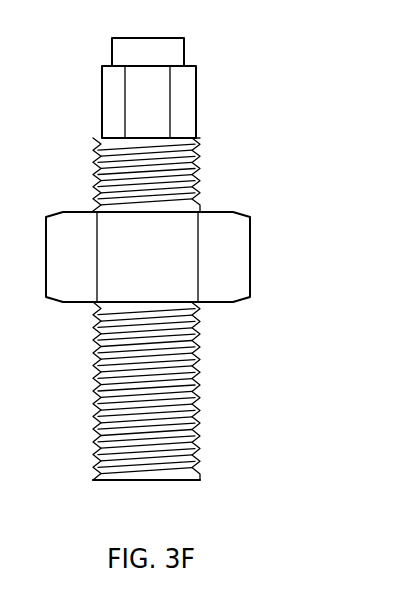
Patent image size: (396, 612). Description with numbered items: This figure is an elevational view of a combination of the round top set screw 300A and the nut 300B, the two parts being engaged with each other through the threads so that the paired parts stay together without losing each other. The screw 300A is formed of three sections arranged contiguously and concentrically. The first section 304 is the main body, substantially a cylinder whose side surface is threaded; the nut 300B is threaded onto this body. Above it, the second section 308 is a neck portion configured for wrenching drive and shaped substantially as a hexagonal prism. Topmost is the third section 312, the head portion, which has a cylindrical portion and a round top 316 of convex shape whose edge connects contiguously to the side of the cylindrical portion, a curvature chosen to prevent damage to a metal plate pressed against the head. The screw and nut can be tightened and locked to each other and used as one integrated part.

The round top 316 is at (150, 36).
The third section 312 is at (168, 51).
The second section 308 is at (180, 105).
The nut 300B is at (247, 316).
The round top set screw 300A is at (216, 388).
The first section 304 is at (170, 443).